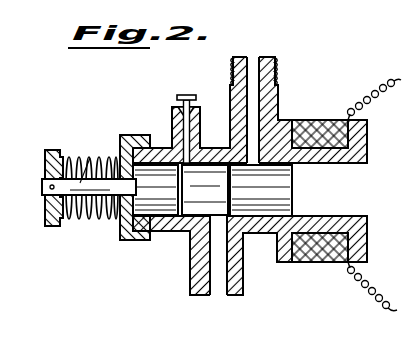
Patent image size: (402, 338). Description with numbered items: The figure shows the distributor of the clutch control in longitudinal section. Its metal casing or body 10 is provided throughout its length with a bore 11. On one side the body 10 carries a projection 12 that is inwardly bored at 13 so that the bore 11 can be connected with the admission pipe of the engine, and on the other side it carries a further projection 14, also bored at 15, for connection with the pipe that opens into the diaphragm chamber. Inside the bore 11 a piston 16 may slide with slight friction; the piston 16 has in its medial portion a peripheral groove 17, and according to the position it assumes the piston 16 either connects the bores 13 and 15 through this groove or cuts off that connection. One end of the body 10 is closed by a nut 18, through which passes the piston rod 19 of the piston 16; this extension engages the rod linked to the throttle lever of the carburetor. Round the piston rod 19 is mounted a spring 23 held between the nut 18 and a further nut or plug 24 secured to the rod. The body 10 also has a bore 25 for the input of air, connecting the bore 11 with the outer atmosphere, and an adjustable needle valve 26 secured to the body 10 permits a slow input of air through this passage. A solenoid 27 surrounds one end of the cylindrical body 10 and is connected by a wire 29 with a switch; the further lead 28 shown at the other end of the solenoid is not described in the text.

The metal casing 10 is at (272, 132).
The bore 11 is at (357, 188).
The projection 12 is at (230, 100).
The bore 13 is at (254, 60).
The projection 14 is at (245, 272).
The bore 15 is at (217, 283).
The piston 16 is at (160, 210).
The peripheral groove 17 is at (196, 208).
The nut 18 is at (125, 135).
The piston rod 19 is at (90, 156).
The spring 23 is at (88, 219).
The nut or plug 24 is at (50, 150).
The bore 25 is at (172, 118).
The adjustable needle valve 26 is at (184, 95).
The solenoid 27 is at (318, 124).
The lead wire 28 is at (358, 100).
The wire 29 is at (357, 296).